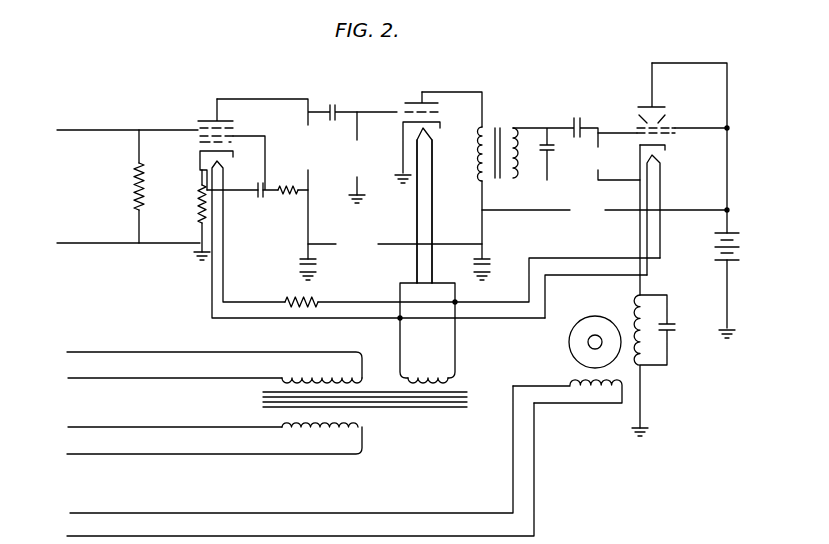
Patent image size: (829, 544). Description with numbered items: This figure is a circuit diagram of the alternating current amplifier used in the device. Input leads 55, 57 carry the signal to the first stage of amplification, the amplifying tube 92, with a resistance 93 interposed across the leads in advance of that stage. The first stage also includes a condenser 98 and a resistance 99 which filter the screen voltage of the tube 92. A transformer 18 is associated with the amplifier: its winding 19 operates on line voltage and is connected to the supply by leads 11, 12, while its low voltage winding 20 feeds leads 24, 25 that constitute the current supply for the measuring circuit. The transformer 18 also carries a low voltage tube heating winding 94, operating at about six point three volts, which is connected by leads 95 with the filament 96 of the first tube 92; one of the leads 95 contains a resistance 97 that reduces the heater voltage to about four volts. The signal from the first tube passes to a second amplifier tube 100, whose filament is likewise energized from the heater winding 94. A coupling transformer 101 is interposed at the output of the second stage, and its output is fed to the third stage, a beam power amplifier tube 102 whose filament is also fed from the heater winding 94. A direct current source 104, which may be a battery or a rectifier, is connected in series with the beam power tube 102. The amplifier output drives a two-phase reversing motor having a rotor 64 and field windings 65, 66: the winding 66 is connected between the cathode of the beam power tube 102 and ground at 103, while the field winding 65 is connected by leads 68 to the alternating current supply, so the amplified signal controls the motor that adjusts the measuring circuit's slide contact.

The lead 57 is at (127, 115).
The lead 55 is at (128, 259).
The resistance 93 is at (134, 188).
The amplifying tube 92 is at (213, 120).
The resistance 99 is at (296, 186).
The filament 96 is at (226, 188).
The condenser 98 is at (263, 197).
The leads 95 is at (242, 320).
The resistance 97 is at (316, 299).
The second amplifier tube 100 is at (415, 97).
The coupling transformer 101 is at (498, 128).
The beam power amplifier tube 102 is at (643, 106).
The direct current source 104 is at (740, 251).
The tube heating winding 94 is at (427, 377).
The lead 25 is at (157, 352).
The low voltage winding 20 is at (333, 371).
The lead 24 is at (100, 379).
The lead 12 is at (182, 427).
The lead 11 is at (205, 455).
The winding 19 is at (317, 429).
The transformer 18 is at (410, 418).
The rotor 64 is at (569, 345).
The field winding 65 is at (593, 388).
The field winding 66 is at (652, 355).
The leads 68 is at (513, 495).
The ground 103 is at (648, 439).